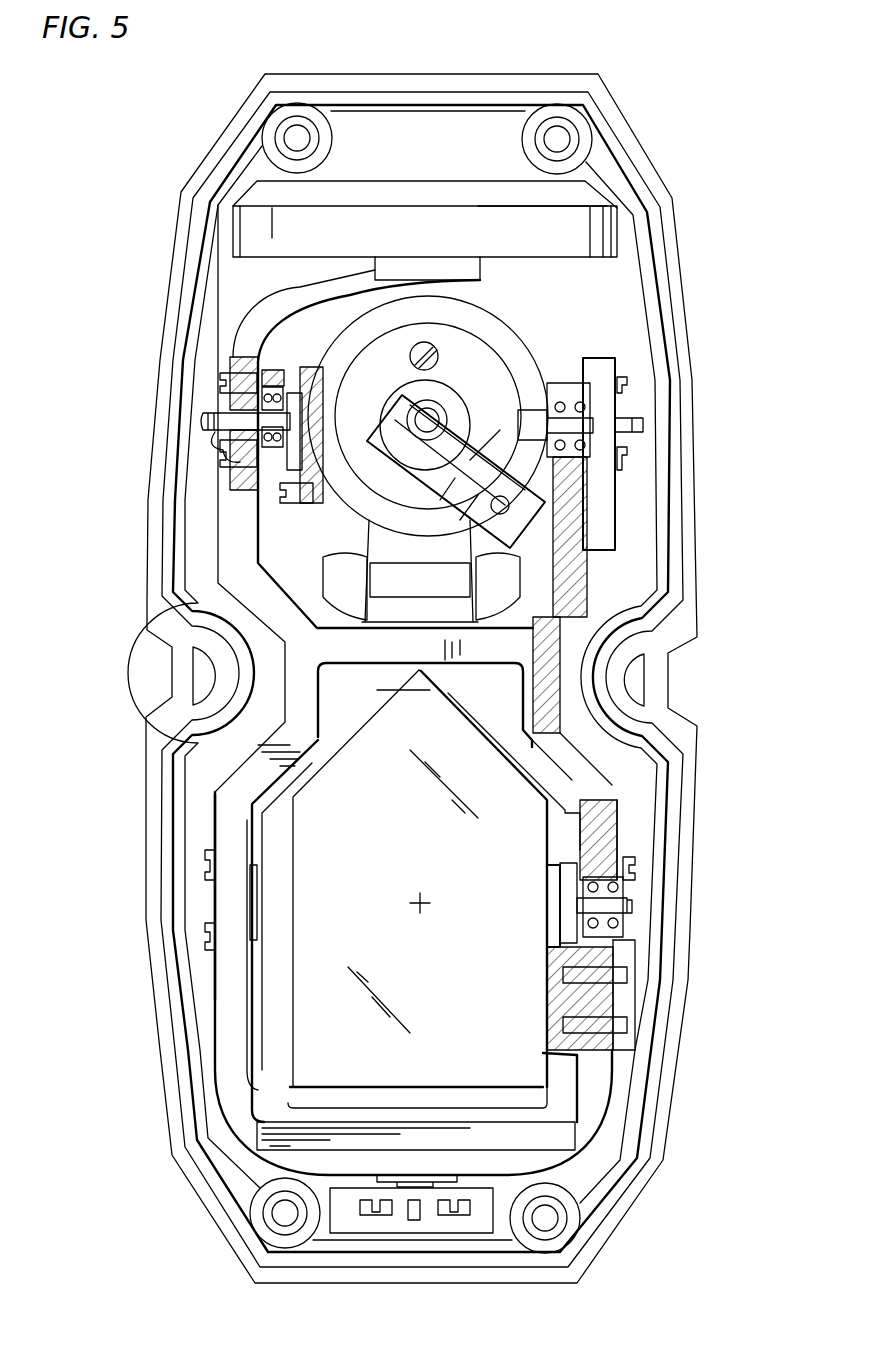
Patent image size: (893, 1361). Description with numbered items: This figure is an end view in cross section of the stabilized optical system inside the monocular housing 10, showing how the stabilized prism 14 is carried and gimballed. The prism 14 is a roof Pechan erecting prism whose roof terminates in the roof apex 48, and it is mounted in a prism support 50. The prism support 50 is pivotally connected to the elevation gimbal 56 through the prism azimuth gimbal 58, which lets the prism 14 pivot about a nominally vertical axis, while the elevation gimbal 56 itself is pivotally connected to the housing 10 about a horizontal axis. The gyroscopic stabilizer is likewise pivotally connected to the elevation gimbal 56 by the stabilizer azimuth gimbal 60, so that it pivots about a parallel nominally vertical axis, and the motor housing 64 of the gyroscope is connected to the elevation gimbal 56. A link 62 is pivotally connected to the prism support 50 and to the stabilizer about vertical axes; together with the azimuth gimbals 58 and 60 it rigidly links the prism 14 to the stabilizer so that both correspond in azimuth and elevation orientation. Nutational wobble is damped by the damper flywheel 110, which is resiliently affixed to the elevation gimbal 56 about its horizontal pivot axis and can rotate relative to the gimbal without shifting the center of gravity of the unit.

The monocular housing 10 is at (637, 146).
The damper flywheel 110 is at (437, 180).
The motor housing 64 is at (470, 358).
The stabilizer azimuth gimbal 60 is at (593, 403).
The roof apex 48 is at (423, 672).
The elevation gimbal 56 is at (215, 822).
The link 62 is at (608, 843).
The prism azimuth gimbal 58 is at (625, 888).
The prism support 50 is at (270, 984).
The stabilized prism 14 is at (452, 1048).